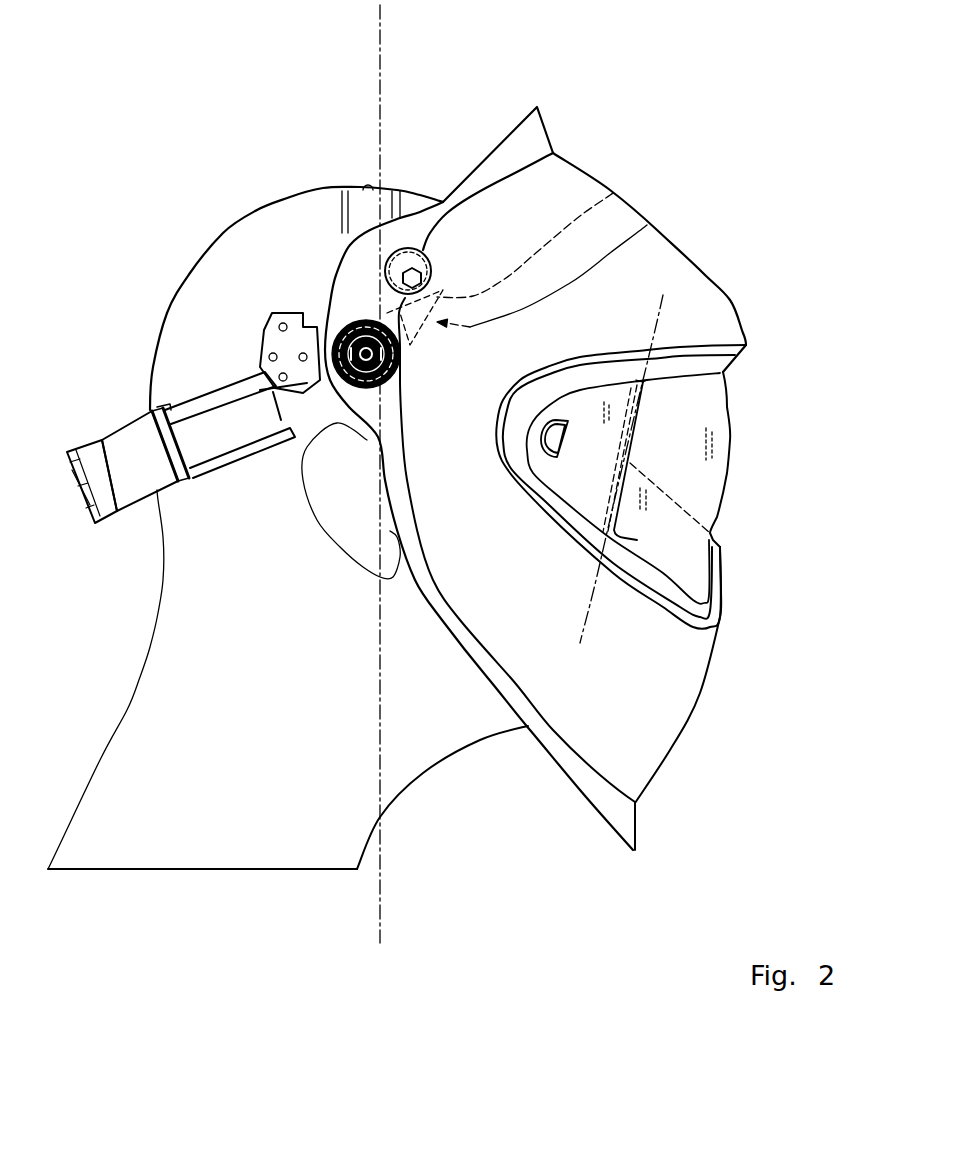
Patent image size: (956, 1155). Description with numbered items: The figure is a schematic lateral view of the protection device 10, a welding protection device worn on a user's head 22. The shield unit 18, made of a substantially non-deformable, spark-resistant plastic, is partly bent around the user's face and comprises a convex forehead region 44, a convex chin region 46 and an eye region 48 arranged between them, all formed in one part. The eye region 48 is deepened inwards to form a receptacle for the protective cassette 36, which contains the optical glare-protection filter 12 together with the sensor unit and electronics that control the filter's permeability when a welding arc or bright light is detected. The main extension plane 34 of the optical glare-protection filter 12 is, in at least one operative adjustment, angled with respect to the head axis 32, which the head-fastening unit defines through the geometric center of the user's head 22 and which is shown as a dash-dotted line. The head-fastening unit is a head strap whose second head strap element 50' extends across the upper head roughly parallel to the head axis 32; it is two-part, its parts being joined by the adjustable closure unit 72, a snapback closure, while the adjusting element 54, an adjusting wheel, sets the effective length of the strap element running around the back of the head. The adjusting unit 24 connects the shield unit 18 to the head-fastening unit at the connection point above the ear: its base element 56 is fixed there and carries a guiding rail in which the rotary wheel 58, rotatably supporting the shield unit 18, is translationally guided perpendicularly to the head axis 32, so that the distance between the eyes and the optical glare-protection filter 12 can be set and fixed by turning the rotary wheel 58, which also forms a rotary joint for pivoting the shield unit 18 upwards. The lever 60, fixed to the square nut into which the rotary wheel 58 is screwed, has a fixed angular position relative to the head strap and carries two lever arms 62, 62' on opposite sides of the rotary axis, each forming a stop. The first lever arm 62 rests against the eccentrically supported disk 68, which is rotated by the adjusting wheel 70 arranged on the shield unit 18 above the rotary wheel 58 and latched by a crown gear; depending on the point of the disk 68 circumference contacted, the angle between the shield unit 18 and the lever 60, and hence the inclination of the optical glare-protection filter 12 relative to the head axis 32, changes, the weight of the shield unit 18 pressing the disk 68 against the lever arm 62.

The protection device 10 is at (598, 125).
The optical glare-protection filter 12 is at (640, 445).
The shield unit 18 is at (616, 171).
The user's head 22 is at (173, 655).
The adjusting unit 24 is at (647, 225).
The head axis 32 is at (380, 20).
The main extension plane 34 is at (590, 617).
The protective cassette 36 is at (672, 415).
The forehead region 44 is at (683, 297).
The chin region 46 is at (627, 720).
The eye region 48 is at (660, 520).
The second head strap element 50' is at (409, 151).
The adjusting element 54 is at (93, 448).
The base element 56 is at (270, 313).
The rotary wheel 58 is at (337, 337).
The lever 60 is at (246, 413).
The first lever arm 62 is at (569, 233).
The second lever arm 62' is at (187, 335).
The eccentrically supported disk 68 is at (410, 247).
The adjusting wheel 70 is at (365, 325).
The adjustable closure unit 72 is at (357, 180).